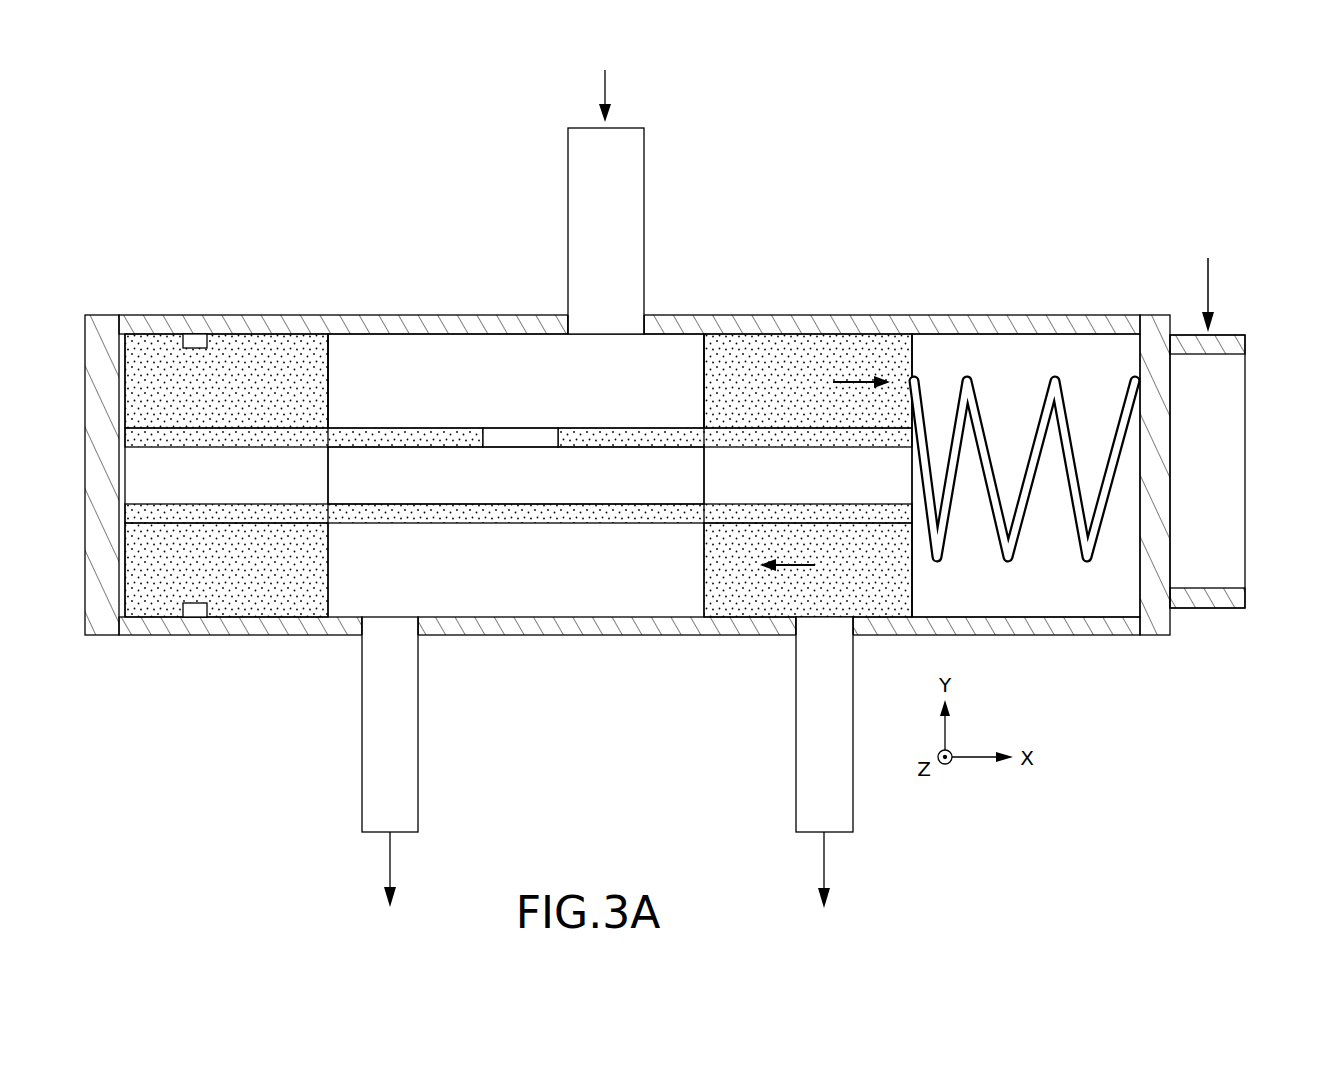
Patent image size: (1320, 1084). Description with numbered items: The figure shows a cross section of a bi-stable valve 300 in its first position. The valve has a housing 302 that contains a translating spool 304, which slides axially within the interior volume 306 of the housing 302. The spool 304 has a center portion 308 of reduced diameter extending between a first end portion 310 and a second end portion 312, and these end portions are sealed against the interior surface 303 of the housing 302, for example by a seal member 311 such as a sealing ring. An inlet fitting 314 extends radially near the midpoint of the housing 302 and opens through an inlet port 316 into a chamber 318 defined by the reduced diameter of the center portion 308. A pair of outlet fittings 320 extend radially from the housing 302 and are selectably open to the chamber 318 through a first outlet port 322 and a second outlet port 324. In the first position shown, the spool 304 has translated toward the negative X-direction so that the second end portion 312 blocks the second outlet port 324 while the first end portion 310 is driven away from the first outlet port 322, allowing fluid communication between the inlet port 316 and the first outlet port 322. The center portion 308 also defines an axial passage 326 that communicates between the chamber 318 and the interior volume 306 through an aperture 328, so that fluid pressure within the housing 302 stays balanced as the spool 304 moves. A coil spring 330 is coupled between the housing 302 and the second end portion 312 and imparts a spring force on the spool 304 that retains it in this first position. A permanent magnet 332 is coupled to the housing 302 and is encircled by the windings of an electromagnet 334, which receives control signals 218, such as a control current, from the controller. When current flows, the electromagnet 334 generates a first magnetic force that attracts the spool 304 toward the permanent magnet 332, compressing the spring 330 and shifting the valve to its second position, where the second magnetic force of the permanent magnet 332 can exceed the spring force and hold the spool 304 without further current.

The control signals 218 is at (1210, 283).
The bi-stable valve 300 is at (700, 489).
The housing 302 is at (627, 489).
The interior surface 303 is at (453, 336).
The spool 304 is at (518, 444).
The interior volume 306 is at (989, 366).
The center portion 308 is at (405, 438).
The first end portion 310 is at (153, 348).
The seal member 311 is at (193, 610).
The second end portion 312 is at (795, 346).
The inlet fitting 314 is at (632, 152).
The inlet port 316 is at (625, 323).
The chamber 318 is at (586, 394).
The outlet fittings 320 is at (372, 735).
The first outlet port 322 is at (378, 630).
The second outlet port 324 is at (820, 620).
The axial passage 326 is at (345, 489).
The aperture 328 is at (500, 438).
The spring 330 is at (1015, 570).
The permanent magnet 332 is at (1243, 466).
The electromagnet 334 is at (1242, 346).